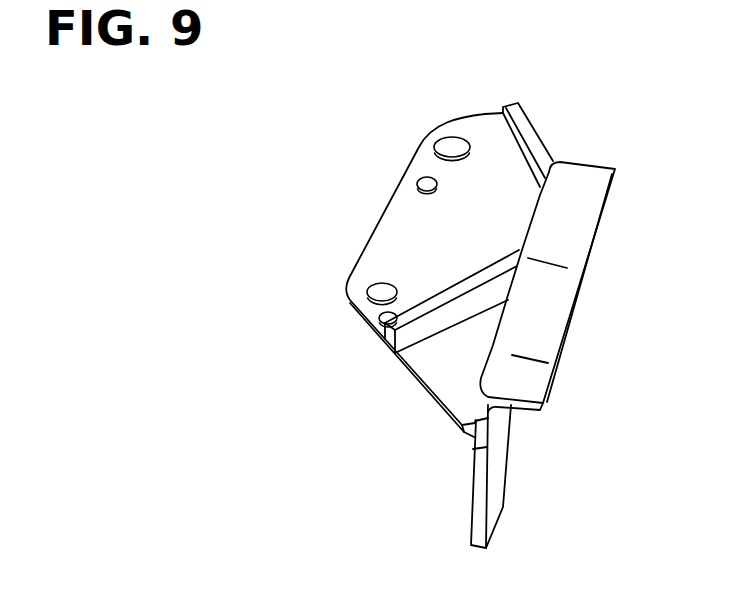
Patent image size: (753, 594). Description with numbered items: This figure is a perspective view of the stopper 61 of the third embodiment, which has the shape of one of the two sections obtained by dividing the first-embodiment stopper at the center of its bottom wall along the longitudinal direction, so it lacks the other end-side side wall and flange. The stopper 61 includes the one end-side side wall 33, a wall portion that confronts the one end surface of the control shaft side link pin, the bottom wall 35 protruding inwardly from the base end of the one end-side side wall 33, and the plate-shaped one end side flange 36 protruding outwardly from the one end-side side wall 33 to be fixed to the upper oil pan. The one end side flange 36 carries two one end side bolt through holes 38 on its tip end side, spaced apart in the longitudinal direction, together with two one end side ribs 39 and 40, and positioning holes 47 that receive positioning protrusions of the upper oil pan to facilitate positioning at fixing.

The one end-side side wall 33 is at (497, 447).
The bottom wall 35 is at (590, 185).
The one end side flange 36 is at (440, 380).
The one end side bolt through holes 38 is at (453, 147).
The one end side rib 39 is at (530, 137).
The one end side rib 40 is at (408, 337).
The positioning holes 47 is at (427, 183).
The stopper 61 is at (607, 149).